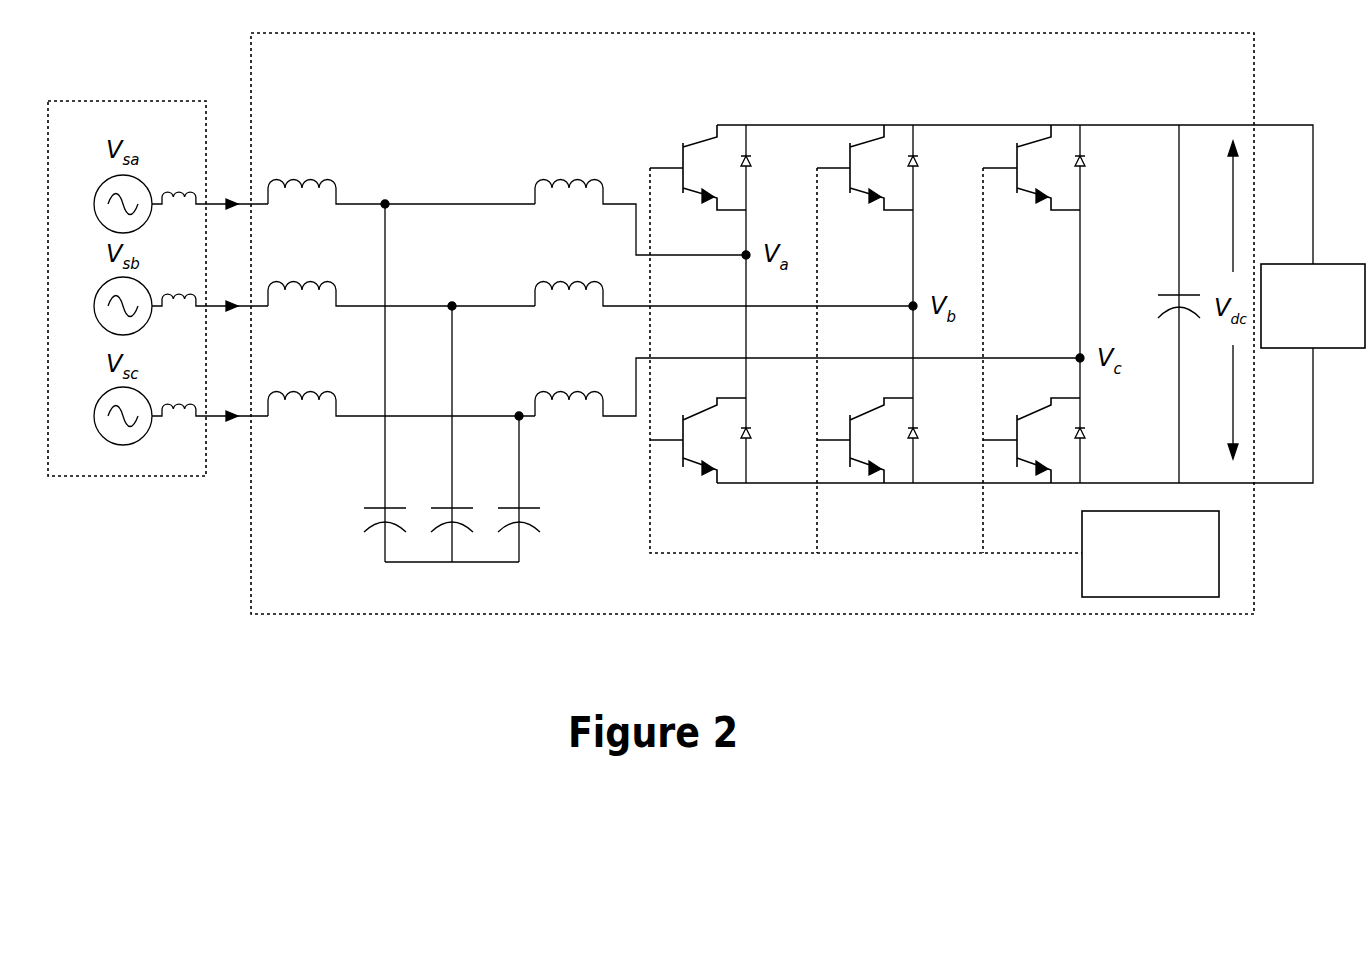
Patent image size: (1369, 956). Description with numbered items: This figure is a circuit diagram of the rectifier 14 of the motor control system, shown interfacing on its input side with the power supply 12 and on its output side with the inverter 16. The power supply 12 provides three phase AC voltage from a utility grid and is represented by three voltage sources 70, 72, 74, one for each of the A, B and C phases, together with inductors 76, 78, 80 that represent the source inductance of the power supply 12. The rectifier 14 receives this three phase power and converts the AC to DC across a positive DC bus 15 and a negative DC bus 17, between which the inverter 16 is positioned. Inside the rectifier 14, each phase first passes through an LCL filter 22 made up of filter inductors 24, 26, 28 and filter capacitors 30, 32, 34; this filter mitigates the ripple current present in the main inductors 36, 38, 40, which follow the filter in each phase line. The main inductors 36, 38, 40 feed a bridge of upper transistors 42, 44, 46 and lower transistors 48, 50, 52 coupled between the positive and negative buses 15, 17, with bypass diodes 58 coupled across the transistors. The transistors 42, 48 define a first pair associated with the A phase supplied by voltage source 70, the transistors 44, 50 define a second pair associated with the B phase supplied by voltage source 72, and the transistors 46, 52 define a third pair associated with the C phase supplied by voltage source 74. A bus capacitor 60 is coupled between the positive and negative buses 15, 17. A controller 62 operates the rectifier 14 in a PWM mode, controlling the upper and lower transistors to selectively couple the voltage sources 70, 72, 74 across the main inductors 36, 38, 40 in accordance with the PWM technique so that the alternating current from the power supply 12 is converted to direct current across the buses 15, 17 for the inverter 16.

The power supply 12 is at (137, 100).
The rectifier 14 is at (251, 66).
The positive DC bus 15 is at (1129, 124).
The inverter 16 is at (1313, 306).
The negative DC bus 17 is at (1125, 481).
The LCL filter 22 is at (298, 496).
The filter inductor 24 is at (311, 178).
The filter inductor 26 is at (311, 281).
The filter inductor 28 is at (311, 391).
The filter capacitor 30 is at (377, 507).
The filter capacitor 32 is at (445, 507).
The filter capacitor 34 is at (512, 507).
The main inductor 36 is at (578, 176).
The main inductor 38 is at (578, 278).
The main inductor 40 is at (578, 388).
The upper transistor 42 is at (680, 155).
The upper transistor 44 is at (848, 155).
The upper transistor 46 is at (1015, 155).
The lower transistor 48 is at (683, 456).
The lower transistor 50 is at (850, 456).
The lower transistor 52 is at (1017, 457).
The bypass diode 58 is at (752, 160).
The bus capacitor 60 is at (1170, 293).
The controller 62 is at (1150, 554).
The voltage source 70 is at (92, 204).
The voltage source 72 is at (92, 306).
The voltage source 74 is at (92, 416).
The inductor 76 is at (182, 187).
The inductor 78 is at (182, 289).
The inductor 80 is at (182, 399).